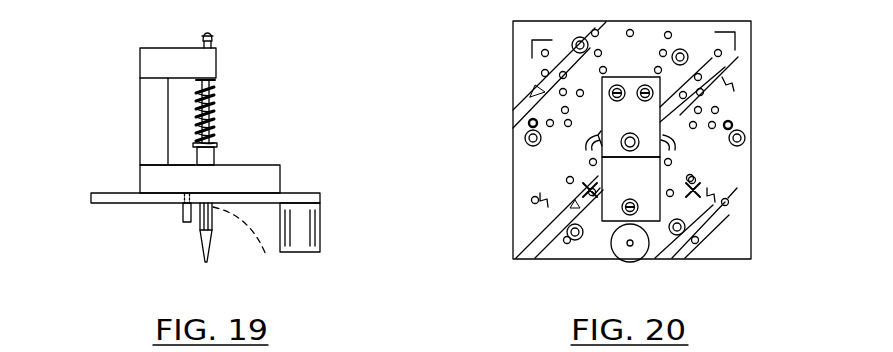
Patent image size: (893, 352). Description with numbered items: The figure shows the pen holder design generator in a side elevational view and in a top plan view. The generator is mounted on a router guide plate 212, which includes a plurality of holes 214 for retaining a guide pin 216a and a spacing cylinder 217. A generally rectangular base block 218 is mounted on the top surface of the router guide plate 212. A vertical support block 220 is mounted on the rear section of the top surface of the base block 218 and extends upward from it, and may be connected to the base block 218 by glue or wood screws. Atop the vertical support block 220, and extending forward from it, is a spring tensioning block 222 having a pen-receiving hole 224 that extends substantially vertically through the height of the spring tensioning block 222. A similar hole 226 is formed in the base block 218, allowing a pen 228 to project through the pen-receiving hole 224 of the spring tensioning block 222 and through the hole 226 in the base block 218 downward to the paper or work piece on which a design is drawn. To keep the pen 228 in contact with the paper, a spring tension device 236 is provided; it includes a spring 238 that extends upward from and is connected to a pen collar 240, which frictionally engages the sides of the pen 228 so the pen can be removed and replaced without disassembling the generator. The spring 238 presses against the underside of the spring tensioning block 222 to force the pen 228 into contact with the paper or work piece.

In FIG. 19, the router guide plate 212 is at (108, 200).
In FIG. 20, the router guide plate 212 is at (723, 247).
In FIG. 20, the holes 214 is at (560, 106).
In FIG. 19, the guide pin 216a is at (180, 218).
In FIG. 19, the spacing cylinder 217 is at (316, 230).
In FIG. 19, the base block 218 is at (138, 175).
In FIG. 20, the base block 218 is at (641, 183).
In FIG. 19, the vertical support block 220 is at (148, 120).
In FIG. 19, the spring tensioning block 222 is at (150, 60).
In FIG. 20, the pen-receiving hole 224 is at (636, 139).
In FIG. 19, the hole 226 is at (266, 255).
In FIG. 19, the pen 228 is at (210, 247).
In FIG. 19, the spring tension device 236 is at (236, 116).
In FIG. 19, the spring 238 is at (216, 90).
In FIG. 19, the pen collar 240 is at (217, 163).